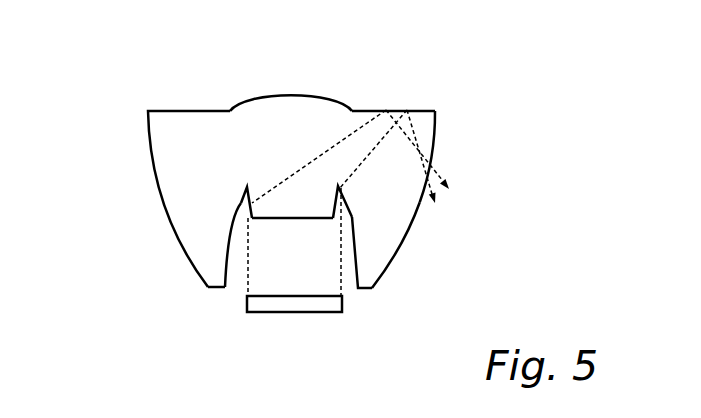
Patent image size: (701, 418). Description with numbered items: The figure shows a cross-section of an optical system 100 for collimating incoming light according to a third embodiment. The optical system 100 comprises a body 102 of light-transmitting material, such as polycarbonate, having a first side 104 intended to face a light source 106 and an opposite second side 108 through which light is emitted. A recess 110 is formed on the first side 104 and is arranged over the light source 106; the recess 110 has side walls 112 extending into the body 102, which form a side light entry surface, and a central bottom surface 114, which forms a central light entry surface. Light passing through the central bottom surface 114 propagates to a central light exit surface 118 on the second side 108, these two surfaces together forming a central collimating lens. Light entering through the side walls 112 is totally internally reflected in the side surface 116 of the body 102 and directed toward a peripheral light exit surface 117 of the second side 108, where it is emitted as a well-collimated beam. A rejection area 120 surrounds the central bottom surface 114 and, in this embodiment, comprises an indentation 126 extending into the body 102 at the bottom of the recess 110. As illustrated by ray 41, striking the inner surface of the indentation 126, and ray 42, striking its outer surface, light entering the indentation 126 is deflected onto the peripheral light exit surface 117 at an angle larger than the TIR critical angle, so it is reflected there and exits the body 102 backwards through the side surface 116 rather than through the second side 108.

The optical system 100 is at (113, 64).
The body 102 is at (423, 158).
The first side 104 is at (367, 290).
The light source 106 is at (288, 303).
The second side 108 is at (418, 108).
The recess 110 is at (233, 257).
The side walls 112 is at (226, 248).
The central bottom surface 114 is at (310, 220).
The side surface 116 is at (420, 205).
The peripheral light exit surface 117 is at (394, 109).
The central light exit surface 118 is at (340, 103).
The rejection area 120 is at (369, 210).
The indentation 126 is at (237, 204).
The ray 41 is at (283, 178).
The ray 42 is at (422, 132).